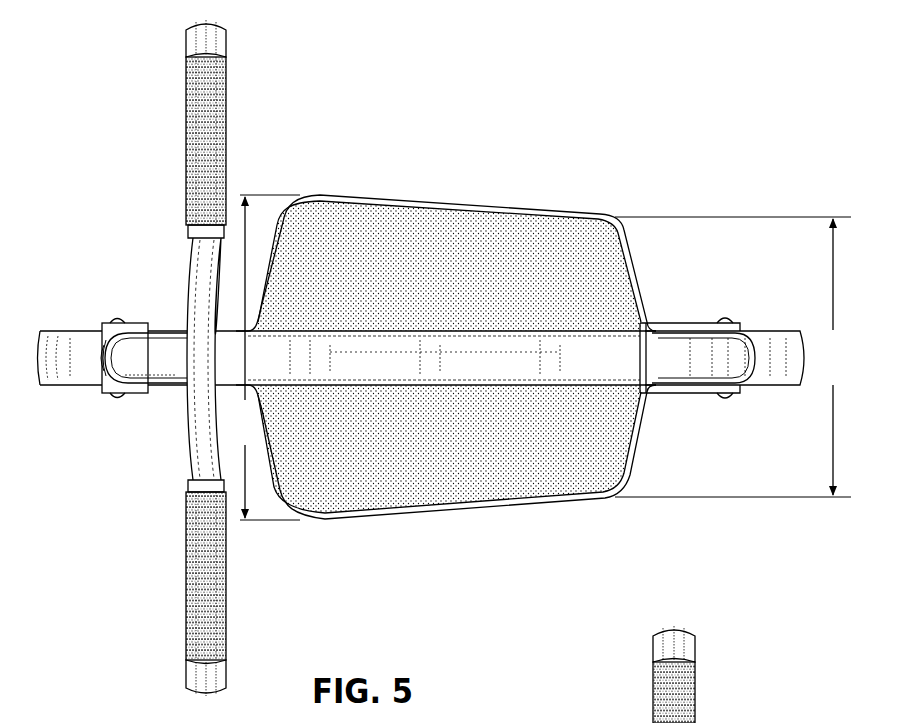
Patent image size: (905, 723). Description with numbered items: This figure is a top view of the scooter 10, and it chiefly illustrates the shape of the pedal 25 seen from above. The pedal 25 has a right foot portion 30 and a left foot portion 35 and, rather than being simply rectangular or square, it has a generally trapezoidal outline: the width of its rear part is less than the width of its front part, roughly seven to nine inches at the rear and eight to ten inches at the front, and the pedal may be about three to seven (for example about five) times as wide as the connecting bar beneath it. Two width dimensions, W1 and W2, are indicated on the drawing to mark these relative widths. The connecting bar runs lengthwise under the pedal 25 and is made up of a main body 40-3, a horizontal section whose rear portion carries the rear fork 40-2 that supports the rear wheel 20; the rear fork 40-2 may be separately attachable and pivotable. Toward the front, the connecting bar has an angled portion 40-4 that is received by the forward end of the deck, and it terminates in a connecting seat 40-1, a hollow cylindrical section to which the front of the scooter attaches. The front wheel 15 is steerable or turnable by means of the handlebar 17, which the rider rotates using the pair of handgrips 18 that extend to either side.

The scooter 10 is at (479, 352).
The front wheel 15 is at (70, 353).
The handlebar 17 is at (165, 362).
The handgrips 18 is at (226, 100).
The rear wheel 20 is at (765, 365).
The pedal 25 is at (479, 364).
The right foot portion 30 is at (343, 228).
The left foot portion 35 is at (368, 495).
The connecting seat 40-1 is at (105, 363).
The rear fork 40-2 is at (678, 385).
The main body 40-3 is at (230, 355).
The angled portion 40-4 is at (470, 353).
The first width W1 is at (733, 357).
The second width W2 is at (265, 357).